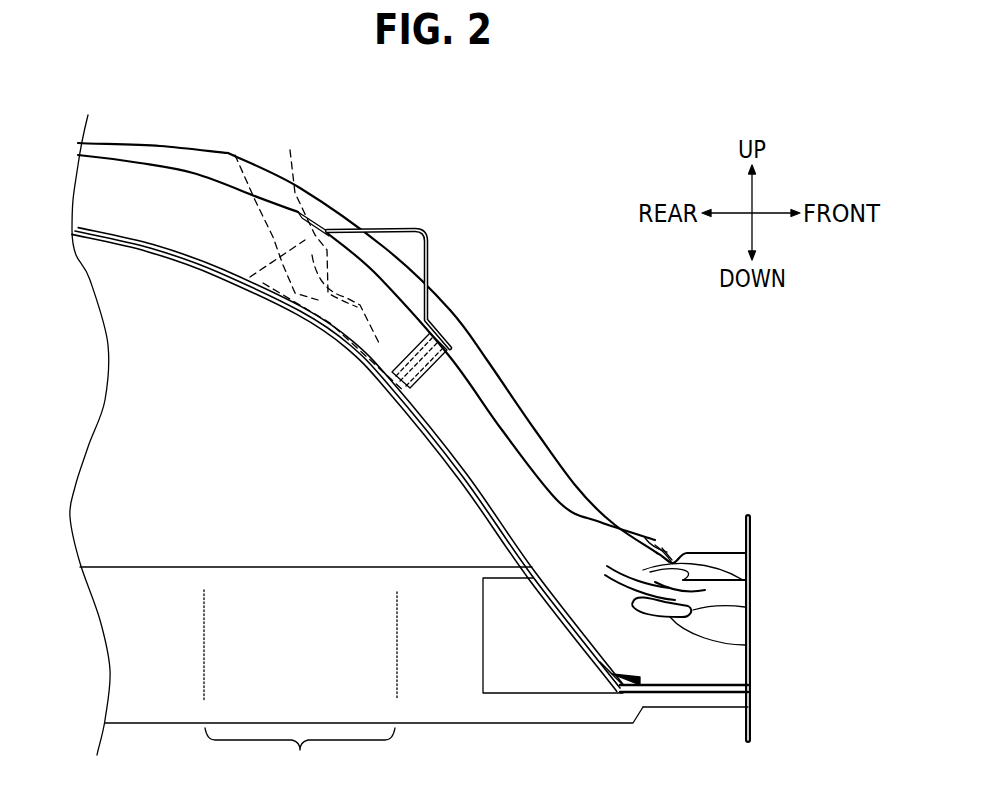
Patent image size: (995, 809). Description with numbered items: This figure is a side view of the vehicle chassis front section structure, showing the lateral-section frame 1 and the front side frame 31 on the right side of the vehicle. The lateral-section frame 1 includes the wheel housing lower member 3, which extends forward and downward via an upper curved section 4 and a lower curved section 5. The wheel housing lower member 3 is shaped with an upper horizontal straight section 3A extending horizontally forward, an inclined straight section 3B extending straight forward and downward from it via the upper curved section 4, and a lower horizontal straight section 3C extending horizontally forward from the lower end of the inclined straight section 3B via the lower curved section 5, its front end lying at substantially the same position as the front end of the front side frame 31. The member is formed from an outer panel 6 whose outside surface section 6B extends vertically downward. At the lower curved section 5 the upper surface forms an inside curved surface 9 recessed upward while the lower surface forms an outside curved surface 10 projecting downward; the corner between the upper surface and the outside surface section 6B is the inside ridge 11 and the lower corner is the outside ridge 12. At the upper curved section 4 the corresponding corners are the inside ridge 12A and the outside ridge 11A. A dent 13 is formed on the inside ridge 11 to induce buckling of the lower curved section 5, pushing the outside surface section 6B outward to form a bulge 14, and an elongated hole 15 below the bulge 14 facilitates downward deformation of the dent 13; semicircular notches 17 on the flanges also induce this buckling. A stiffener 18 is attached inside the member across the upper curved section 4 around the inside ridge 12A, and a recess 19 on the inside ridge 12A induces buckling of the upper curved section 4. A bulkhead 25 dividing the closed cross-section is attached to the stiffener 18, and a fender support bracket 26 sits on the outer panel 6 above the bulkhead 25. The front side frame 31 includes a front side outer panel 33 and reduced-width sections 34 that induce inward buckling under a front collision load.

The lateral-section frame 1 is at (337, 175).
The wheel housing lower member 3 is at (445, 170).
The upper horizontal straight section 3A is at (133, 128).
The inclined straight section 3B is at (457, 282).
The lower horizontal straight section 3C is at (709, 534).
The upper curved section 4 is at (327, 347).
The lower curved section 5 is at (650, 527).
The outer panel 6 is at (423, 393).
The outside surface section 6B is at (473, 463).
The inside curved surface 9 is at (660, 543).
The outside curved surface 10 is at (640, 705).
The inside ridge 11 is at (657, 540).
The outside ridge 11A is at (358, 229).
The outside ridge 12 is at (583, 640).
The inside ridge 12A is at (357, 360).
The dent 13 is at (750, 578).
The bulge 14 is at (750, 606).
The elongated hole 15 is at (750, 645).
The notch 17 is at (622, 693).
The stiffener 18 is at (235, 152).
The recess 19 is at (290, 150).
The bulkhead 25 is at (437, 377).
The fender support bracket 26 is at (433, 228).
The front side frame 31 is at (212, 563).
The front side outer panel 33 is at (345, 725).
The reduced-width section 34 is at (300, 756).